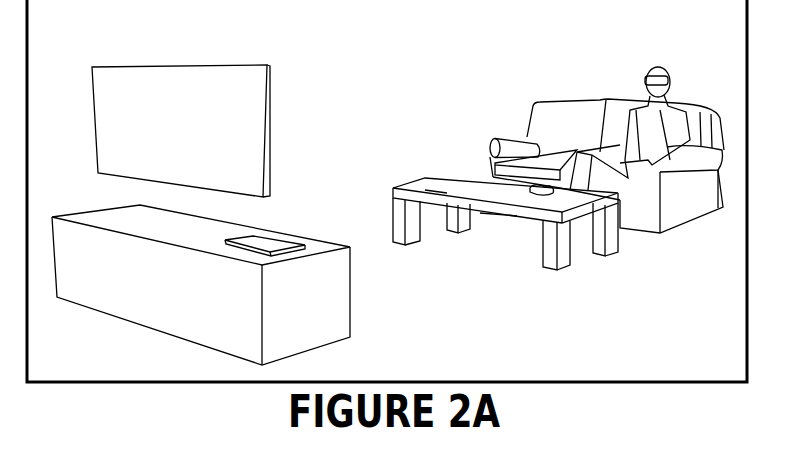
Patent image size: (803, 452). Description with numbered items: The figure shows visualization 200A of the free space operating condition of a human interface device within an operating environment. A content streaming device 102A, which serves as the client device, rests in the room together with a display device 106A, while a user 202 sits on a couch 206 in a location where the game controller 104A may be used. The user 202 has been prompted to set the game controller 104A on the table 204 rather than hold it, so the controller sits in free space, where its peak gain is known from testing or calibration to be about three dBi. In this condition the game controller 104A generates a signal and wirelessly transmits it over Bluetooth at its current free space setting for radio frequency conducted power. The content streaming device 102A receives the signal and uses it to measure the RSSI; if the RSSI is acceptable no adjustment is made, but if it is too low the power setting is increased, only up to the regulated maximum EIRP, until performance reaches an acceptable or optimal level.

The visualization 200A is at (88, 30).
The display device 106A is at (203, 134).
The content streaming device 102A is at (225, 240).
The table 204 is at (425, 178).
The game controller 104A is at (530, 191).
The couch 206 is at (703, 198).
The user 202 is at (645, 102).